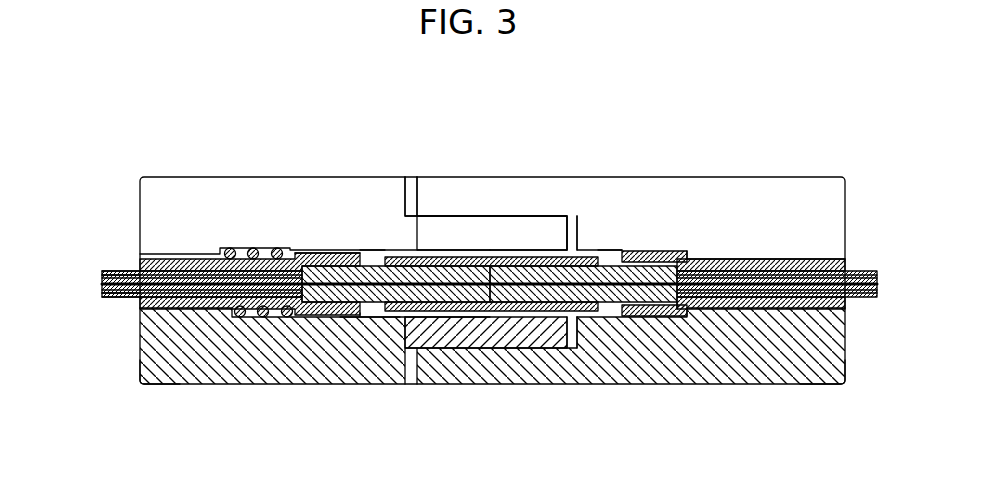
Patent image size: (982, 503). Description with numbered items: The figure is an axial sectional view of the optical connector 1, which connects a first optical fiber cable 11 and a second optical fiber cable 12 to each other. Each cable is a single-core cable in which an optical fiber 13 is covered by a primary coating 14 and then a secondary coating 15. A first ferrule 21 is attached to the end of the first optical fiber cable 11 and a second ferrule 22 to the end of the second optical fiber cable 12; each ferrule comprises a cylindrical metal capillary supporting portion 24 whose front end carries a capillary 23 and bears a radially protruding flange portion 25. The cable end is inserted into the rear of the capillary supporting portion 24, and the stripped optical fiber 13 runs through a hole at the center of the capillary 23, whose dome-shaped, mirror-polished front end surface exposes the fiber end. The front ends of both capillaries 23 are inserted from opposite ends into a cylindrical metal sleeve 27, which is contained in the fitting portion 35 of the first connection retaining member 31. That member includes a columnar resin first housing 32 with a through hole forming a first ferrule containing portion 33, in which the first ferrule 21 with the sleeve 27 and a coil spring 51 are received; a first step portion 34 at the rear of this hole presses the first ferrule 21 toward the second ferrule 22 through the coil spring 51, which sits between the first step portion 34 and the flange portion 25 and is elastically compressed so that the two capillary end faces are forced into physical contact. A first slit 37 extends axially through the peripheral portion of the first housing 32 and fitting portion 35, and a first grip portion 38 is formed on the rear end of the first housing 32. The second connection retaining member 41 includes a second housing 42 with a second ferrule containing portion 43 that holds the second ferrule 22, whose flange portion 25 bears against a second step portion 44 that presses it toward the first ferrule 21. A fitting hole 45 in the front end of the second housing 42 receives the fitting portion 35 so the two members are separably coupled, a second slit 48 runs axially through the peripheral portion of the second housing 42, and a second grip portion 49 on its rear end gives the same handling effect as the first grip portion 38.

The optical connector 1 is at (398, 94).
The first optical fiber cable 11 is at (120, 269).
The second optical fiber cable 12 is at (862, 268).
The optical fiber 13 is at (102, 283).
The primary coating 14 is at (117, 295).
The secondary coating 15 is at (107, 273).
The first ferrule 21 is at (373, 242).
The second ferrule 22 is at (609, 242).
The capillary 23 is at (438, 305).
The capillary supporting portion 24 is at (188, 310).
The flange portion 25 is at (327, 250).
The sleeve 27 is at (508, 257).
The first connection retaining member 31 is at (184, 146).
The first housing 32 is at (298, 372).
The first ferrule containing portion 33 is at (367, 320).
The first step portion 34 is at (236, 320).
The fitting portion 35 is at (490, 334).
The first slit 37 is at (282, 212).
The first grip portion 38 is at (157, 386).
The second connection retaining member 41 is at (805, 152).
The second housing 42 is at (765, 374).
The second ferrule containing portion 43 is at (608, 318).
The second step portion 44 is at (680, 310).
The fitting hole 45 is at (458, 224).
The second slit 48 is at (728, 206).
The second grip portion 49 is at (818, 386).
The coil spring 51 is at (250, 248).